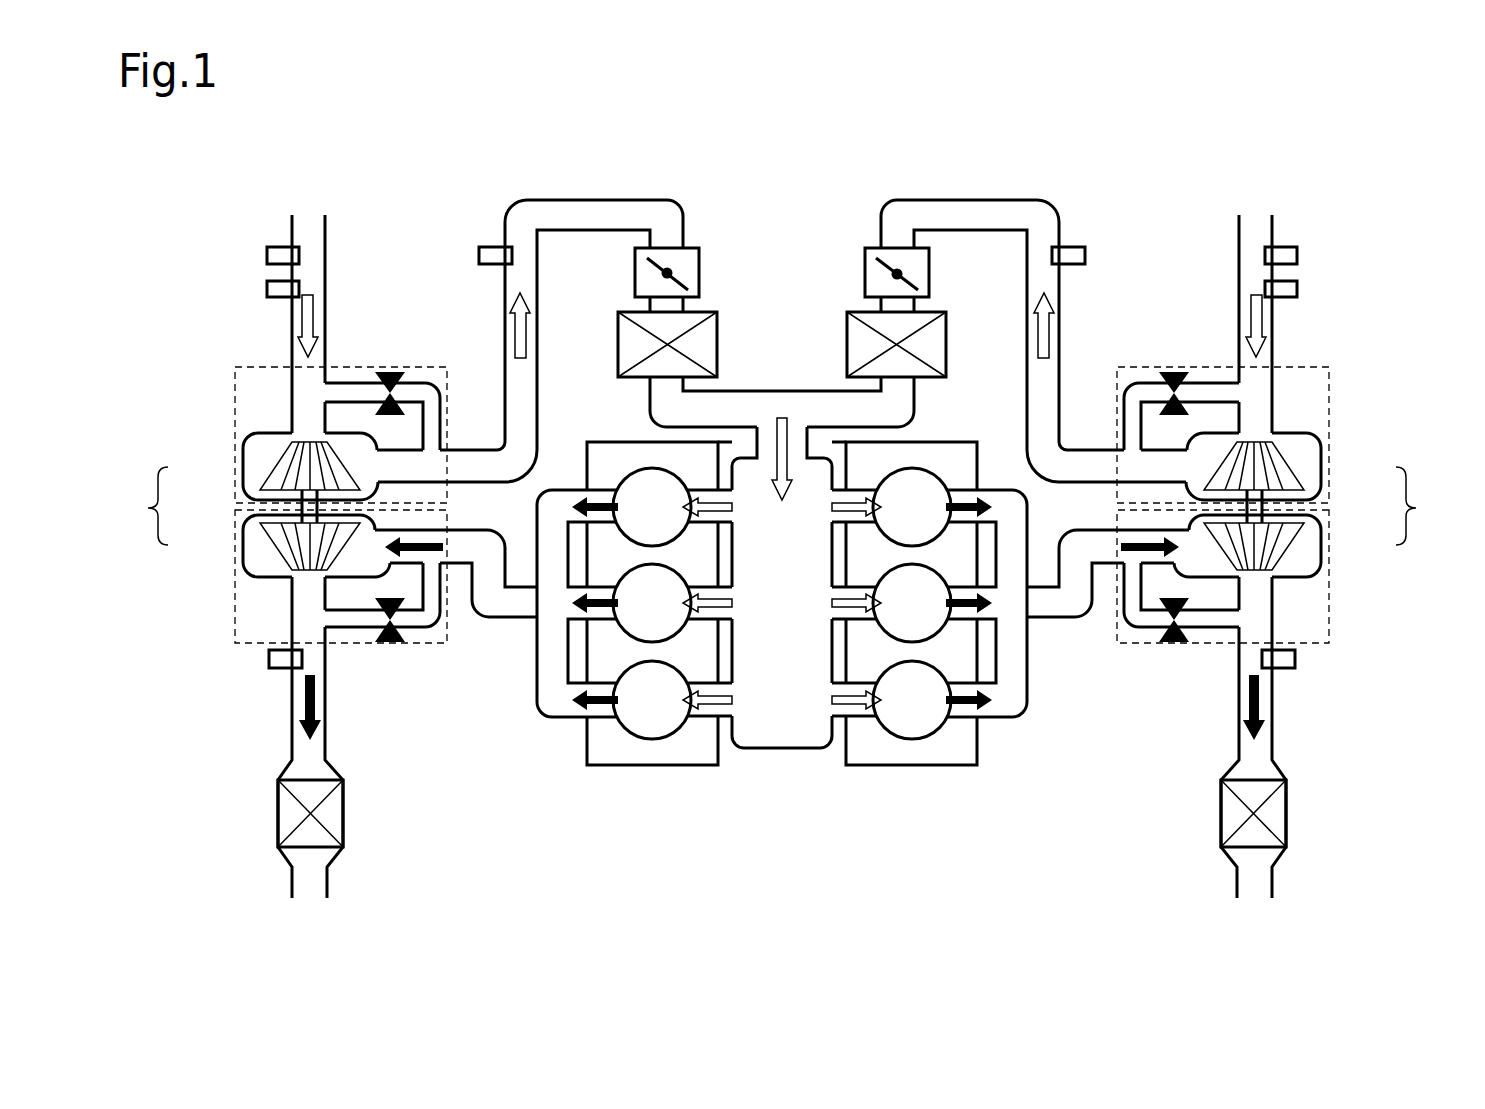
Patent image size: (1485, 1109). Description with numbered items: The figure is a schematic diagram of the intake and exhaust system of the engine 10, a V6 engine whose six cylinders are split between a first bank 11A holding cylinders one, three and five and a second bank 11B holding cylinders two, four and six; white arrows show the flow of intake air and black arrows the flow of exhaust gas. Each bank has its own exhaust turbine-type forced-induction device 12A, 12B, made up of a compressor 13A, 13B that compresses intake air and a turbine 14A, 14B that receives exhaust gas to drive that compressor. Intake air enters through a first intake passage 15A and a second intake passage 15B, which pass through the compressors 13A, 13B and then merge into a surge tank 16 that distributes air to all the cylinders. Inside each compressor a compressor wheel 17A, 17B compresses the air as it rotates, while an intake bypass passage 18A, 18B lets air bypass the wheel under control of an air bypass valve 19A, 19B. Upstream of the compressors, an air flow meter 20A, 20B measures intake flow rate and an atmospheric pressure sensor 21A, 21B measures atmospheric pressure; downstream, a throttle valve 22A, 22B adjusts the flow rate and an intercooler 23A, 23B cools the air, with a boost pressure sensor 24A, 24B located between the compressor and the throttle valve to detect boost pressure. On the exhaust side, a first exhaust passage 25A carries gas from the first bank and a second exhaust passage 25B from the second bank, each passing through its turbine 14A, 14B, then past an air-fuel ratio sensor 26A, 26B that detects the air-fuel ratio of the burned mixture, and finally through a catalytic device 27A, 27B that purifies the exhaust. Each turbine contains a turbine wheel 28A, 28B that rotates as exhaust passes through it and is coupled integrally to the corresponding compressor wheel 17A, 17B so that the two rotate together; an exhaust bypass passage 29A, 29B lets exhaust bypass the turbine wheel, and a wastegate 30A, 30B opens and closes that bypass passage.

The engine 10 is at (405, 198).
The first bank 11A is at (910, 768).
The second bank 11B is at (652, 768).
The exhaust turbine-type forced-induction device 12A is at (1260, 508).
The exhaust turbine-type forced-induction device 12B is at (306, 508).
The compressor 13A is at (1237, 411).
The compressor 13B is at (329, 411).
The turbine 14A is at (1227, 604).
The turbine 14B is at (338, 604).
The first intake passage 15A is at (1059, 325).
The second intake passage 15B is at (505, 325).
The surge tank 16 is at (779, 755).
The compressor wheel 17A is at (1284, 452).
The compressor wheel 17B is at (280, 452).
The intake bypass passage 18A is at (1121, 425).
The intake bypass passage 18B is at (443, 425).
The air bypass valve 19A is at (1174, 372).
The air bypass valve 19B is at (390, 372).
The air flow meter 20A is at (1297, 255).
The air flow meter 20B is at (267, 255).
The atmospheric pressure sensor 21A is at (1297, 290).
The atmospheric pressure sensor 21B is at (267, 290).
The throttle valve 22A is at (929, 268).
The throttle valve 22B is at (635, 265).
The intercooler 23A is at (847, 353).
The intercooler 23B is at (717, 325).
The boost pressure sensor 24A is at (1085, 255).
The boost pressure sensor 24B is at (479, 255).
The first exhaust passage 25A is at (1237, 700).
The second exhaust passage 25B is at (327, 700).
The air-fuel ratio sensor 26A is at (1295, 657).
The air-fuel ratio sensor 26B is at (269, 657).
The catalytic device 27A is at (1286, 815).
The catalytic device 27B is at (278, 815).
The turbine wheel 28A is at (1287, 557).
The turbine wheel 28B is at (277, 557).
The exhaust bypass passage 29A is at (1119, 620).
The exhaust bypass passage 29B is at (445, 620).
The wastegate 30A is at (1172, 642).
The wastegate 30B is at (392, 642).